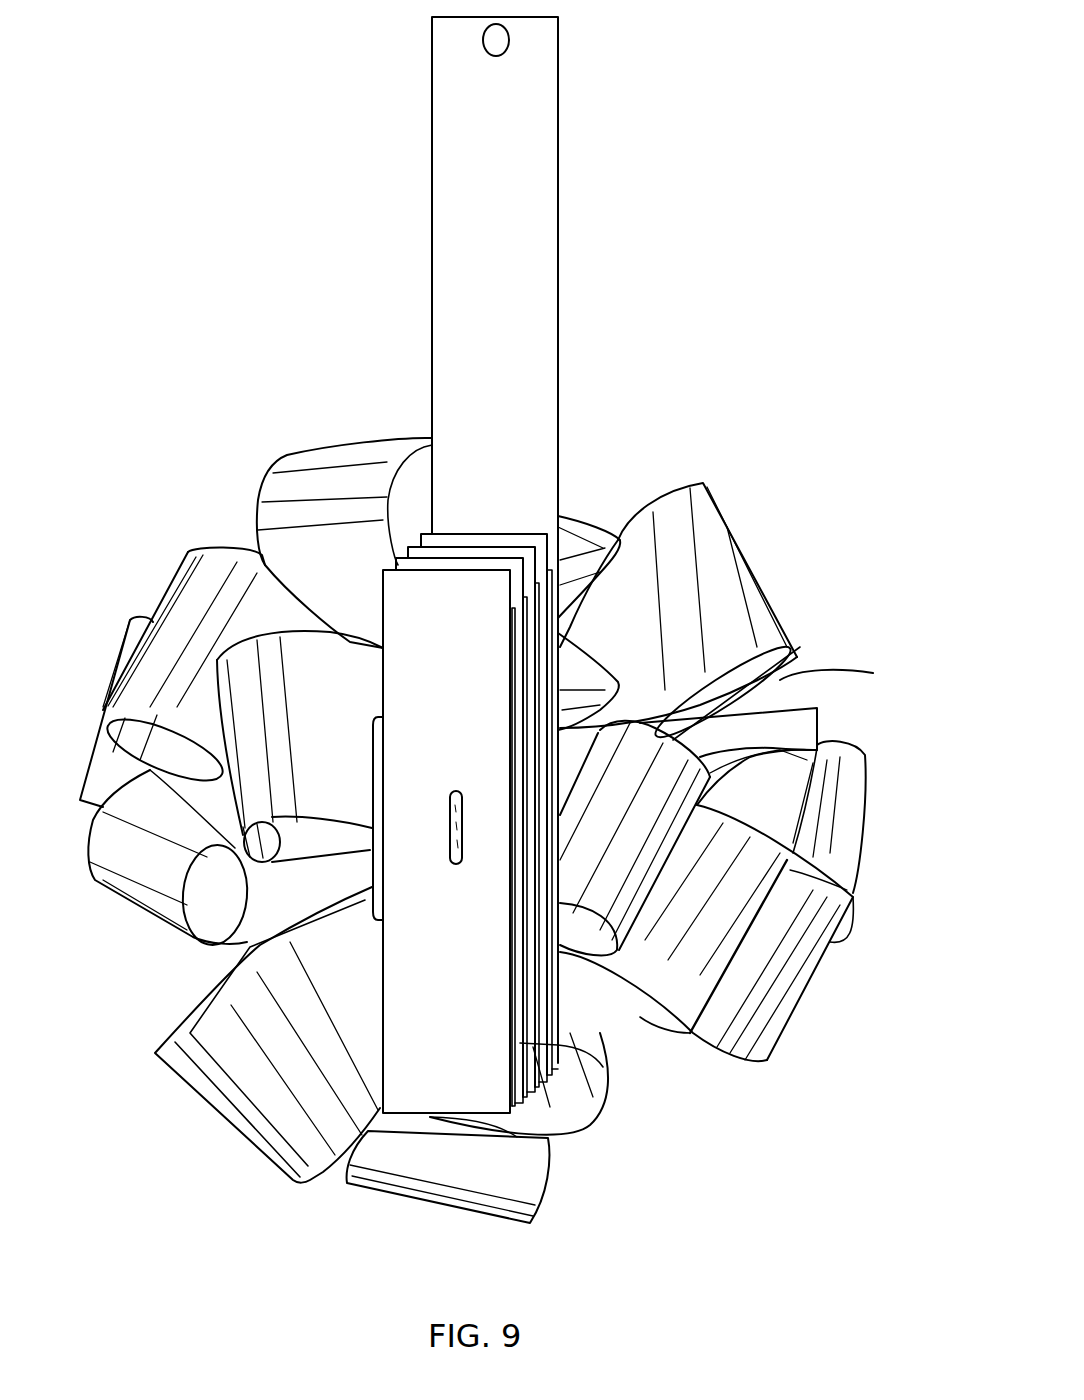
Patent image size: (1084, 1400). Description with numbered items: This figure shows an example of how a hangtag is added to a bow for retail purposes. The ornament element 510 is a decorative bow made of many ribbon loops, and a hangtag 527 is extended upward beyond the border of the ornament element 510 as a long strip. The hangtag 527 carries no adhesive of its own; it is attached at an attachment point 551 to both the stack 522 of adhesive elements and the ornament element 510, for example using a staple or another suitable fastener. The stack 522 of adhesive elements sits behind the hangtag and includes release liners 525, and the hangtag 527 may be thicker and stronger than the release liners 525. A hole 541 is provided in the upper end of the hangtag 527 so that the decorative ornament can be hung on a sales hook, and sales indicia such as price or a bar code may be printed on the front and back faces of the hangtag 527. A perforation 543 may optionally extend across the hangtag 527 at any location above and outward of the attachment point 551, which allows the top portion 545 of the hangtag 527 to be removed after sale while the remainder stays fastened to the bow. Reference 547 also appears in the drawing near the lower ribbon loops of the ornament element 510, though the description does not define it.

The ornament element 510 is at (733, 564).
The stack of adhesive elements 522 is at (533, 1083).
The release liners 525 is at (410, 603).
The hangtag 527 is at (457, 257).
The hole 541 is at (485, 52).
The perforation 543 is at (785, 683).
The top portion 545 is at (442, 362).
The ribbon loop 547 is at (558, 1045).
The attachment point 551 is at (455, 864).